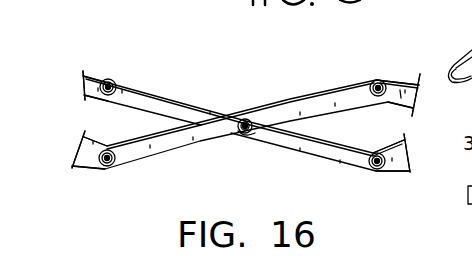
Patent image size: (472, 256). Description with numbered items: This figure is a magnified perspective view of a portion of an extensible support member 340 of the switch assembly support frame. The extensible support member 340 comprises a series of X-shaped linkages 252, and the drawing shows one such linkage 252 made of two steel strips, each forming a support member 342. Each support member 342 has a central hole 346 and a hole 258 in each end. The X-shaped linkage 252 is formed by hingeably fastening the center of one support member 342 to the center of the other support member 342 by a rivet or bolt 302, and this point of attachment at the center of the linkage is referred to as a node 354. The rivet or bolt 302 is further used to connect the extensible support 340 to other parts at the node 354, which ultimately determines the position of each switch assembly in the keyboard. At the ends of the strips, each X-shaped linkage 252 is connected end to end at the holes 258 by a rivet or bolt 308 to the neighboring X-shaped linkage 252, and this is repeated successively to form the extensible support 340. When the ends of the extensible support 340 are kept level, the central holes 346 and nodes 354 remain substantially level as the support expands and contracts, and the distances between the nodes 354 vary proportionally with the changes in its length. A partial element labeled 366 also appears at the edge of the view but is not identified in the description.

The X-shaped linkage 252 is at (280, 98).
The hole 258 is at (112, 78).
The rivet or bolt 302 is at (240, 135).
The rivet or bolt 308 is at (398, 94).
The extensible support member 340 is at (188, 79).
The support member 342 is at (331, 96).
The central hole 346 is at (256, 136).
The node 354 is at (245, 119).
The bracket 366 is at (452, 81).